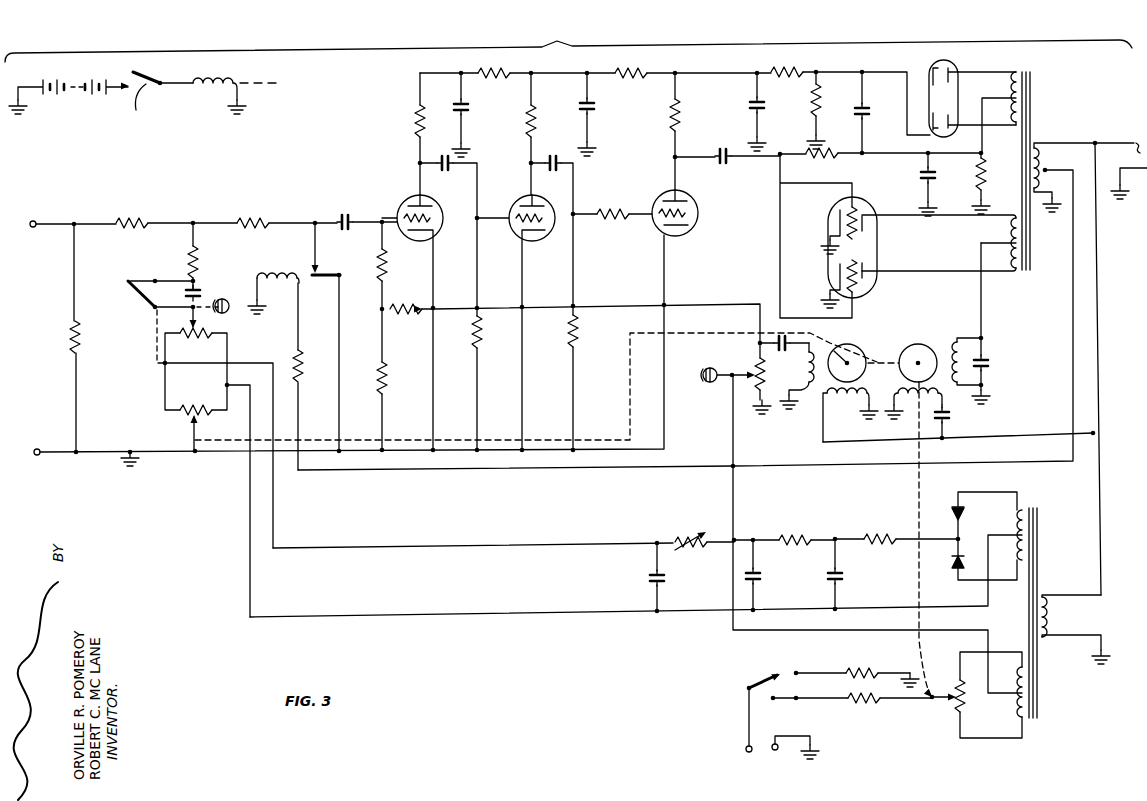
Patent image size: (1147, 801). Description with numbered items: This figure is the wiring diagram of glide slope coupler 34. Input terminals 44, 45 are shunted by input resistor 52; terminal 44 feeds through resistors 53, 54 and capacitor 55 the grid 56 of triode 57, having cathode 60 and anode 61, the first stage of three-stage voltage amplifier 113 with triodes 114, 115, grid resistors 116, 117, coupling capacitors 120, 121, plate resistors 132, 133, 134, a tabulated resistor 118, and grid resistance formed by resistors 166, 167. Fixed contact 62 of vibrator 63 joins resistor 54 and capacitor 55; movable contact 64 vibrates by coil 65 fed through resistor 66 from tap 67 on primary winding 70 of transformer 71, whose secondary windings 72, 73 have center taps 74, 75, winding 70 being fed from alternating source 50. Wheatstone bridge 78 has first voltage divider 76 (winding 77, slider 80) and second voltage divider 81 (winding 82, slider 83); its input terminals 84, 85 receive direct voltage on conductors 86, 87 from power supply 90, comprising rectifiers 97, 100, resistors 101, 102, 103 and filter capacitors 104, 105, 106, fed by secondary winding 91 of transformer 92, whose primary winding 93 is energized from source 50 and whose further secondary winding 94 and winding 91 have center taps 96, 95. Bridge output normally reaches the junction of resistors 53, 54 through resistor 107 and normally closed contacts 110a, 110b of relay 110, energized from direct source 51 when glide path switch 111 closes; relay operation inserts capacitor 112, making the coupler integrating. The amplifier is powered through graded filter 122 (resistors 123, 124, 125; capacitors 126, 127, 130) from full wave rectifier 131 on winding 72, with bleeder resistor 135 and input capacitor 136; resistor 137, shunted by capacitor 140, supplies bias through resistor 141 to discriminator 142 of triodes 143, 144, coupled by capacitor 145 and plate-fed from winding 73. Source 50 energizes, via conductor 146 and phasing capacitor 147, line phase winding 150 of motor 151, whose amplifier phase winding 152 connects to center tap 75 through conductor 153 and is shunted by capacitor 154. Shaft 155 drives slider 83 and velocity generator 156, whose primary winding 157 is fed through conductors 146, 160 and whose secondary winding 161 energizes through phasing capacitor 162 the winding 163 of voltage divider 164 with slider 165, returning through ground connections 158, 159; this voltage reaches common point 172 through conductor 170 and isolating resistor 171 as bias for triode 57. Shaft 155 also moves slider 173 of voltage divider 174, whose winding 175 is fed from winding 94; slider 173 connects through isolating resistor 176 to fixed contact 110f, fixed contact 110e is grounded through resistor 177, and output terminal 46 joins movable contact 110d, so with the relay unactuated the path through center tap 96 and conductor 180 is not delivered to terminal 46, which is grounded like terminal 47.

The power supply and oscillator section 34 is at (568, 41).
The battery 51 is at (70, 96).
The switch 111 is at (141, 100).
The relay coil 110 is at (213, 95).
The input terminal 44 is at (36, 223).
The input terminal 45 is at (38, 455).
The input resistor 52 is at (72, 338).
The resistor 53 is at (140, 222).
The resistor 54 is at (249, 222).
The coupling capacitor 55 is at (349, 214).
The resistor 107 is at (190, 252).
The switch blade 110a is at (139, 306).
The switch contact 110b is at (132, 278).
The capacitor 112 is at (199, 286).
The control knob 76 is at (232, 318).
The wiper 80 is at (192, 327).
The potentiometer 77 is at (185, 341).
The bridge network 78 is at (196, 371).
The potentiometer 82 is at (191, 410).
The bridge arm 81 is at (170, 427).
The wiper 83 is at (196, 438).
The mechanical coupling 84 is at (155, 366).
The bridge output lead 85 is at (232, 383).
The resistor 66 is at (294, 360).
The inductor 65 is at (259, 274).
The inductor lead 63 is at (288, 264).
The switch 62 is at (317, 272).
The switch contact 64 is at (318, 282).
The resistor 166 is at (374, 273).
The resistor 167 is at (380, 391).
The junction 172 is at (380, 320).
The resistor 171 is at (413, 311).
The common lead 170 is at (714, 304).
The amplifier tube 57 is at (398, 208).
The plate 61 is at (428, 204).
The grid 56 is at (438, 230).
The cathode 60 is at (410, 240).
The plate resistor 132 is at (410, 136).
The coupling capacitor 120 is at (460, 163).
The amplifier tube 114 is at (519, 247).
The decoupling resistor 125 is at (484, 72).
The decoupling capacitor 130 is at (468, 114).
The plate resistor 133 is at (540, 120).
The coupling capacitor 121 is at (560, 163).
The decoupling resistor 124 is at (614, 72).
The decoupling capacitor 127 is at (592, 105).
The supply lead 122 is at (668, 62).
The plate resistor 134 is at (672, 122).
The amplifier stage 113 is at (623, 171).
The grid resistor 118 is at (606, 218).
The amplifier tube 115 is at (668, 249).
The coupling capacitor 145 is at (733, 162).
The grid resistor 116 is at (480, 340).
The grid resistor 117 is at (576, 332).
The filter resistor 123 is at (778, 70).
The filter capacitor 126 is at (751, 104).
The bleeder resistor 135 is at (810, 104).
The filter capacitor 136 is at (860, 105).
The rectifier tube 131 is at (932, 64).
The secondary winding 74 is at (992, 103).
The transformer core 72 is at (1014, 72).
The power transformer 71 is at (1038, 110).
The secondary winding 75 is at (990, 244).
The winding lead 73 is at (1018, 272).
The primary winding 70 is at (1039, 144).
The winding tap 67 is at (1048, 170).
The power input terminal 50 is at (1132, 144).
The grid resistor 141 is at (822, 154).
The capacitor 140 is at (920, 174).
The resistor 137 is at (978, 176).
The twin triode tube 142 is at (880, 243).
The triode section 143 is at (864, 200).
The triode section 144 is at (871, 292).
The adjusting knob 165 is at (722, 383).
The wiper 164 is at (746, 357).
The potentiometer 163 is at (758, 400).
The ground 158 is at (751, 435).
The capacitor 162 is at (771, 344).
The inductor 161 is at (814, 390).
The ground 159 is at (786, 418).
The rotary coupling 156 is at (858, 337).
The winding 157 is at (852, 396).
The lead 160 is at (847, 442).
The winding 150 is at (920, 402).
The rotary coupling 151 is at (900, 336).
The capacitor 147 is at (952, 425).
The inductor 152 is at (976, 355).
The lead 153 is at (965, 325).
The capacitor 154 is at (982, 370).
The mechanical linkage 155 is at (531, 430).
The lead 146 is at (1027, 438).
The lead 180 is at (732, 496).
The lead 86 is at (278, 526).
The lead 87 is at (258, 579).
The variable resistor 103 is at (686, 536).
The filter network 90 is at (842, 510).
The resistor 102 is at (792, 536).
The resistor 101 is at (872, 536).
The capacitor 106 is at (670, 580).
The capacitor 105 is at (762, 580).
The capacitor 104 is at (844, 580).
The rectifier 97 is at (956, 506).
The rectifier 100 is at (953, 572).
The secondary winding 95 is at (1015, 530).
The transformer core 91 is at (1017, 508).
The transformer 92 is at (1042, 532).
The primary winding 93 is at (1043, 594).
The secondary winding 96 is at (1020, 684).
The winding lead 94 is at (1020, 717).
The potentiometer 175 is at (960, 702).
The wiper 173 is at (932, 698).
The wiper lead 174 is at (944, 730).
The resistor 176 is at (850, 700).
The resistor 177 is at (826, 672).
The switch blade 110d is at (753, 674).
The switch contact 110e is at (785, 674).
The switch contact 110f is at (784, 700).
The output terminal 46 is at (744, 748).
The output terminal 47 is at (778, 752).